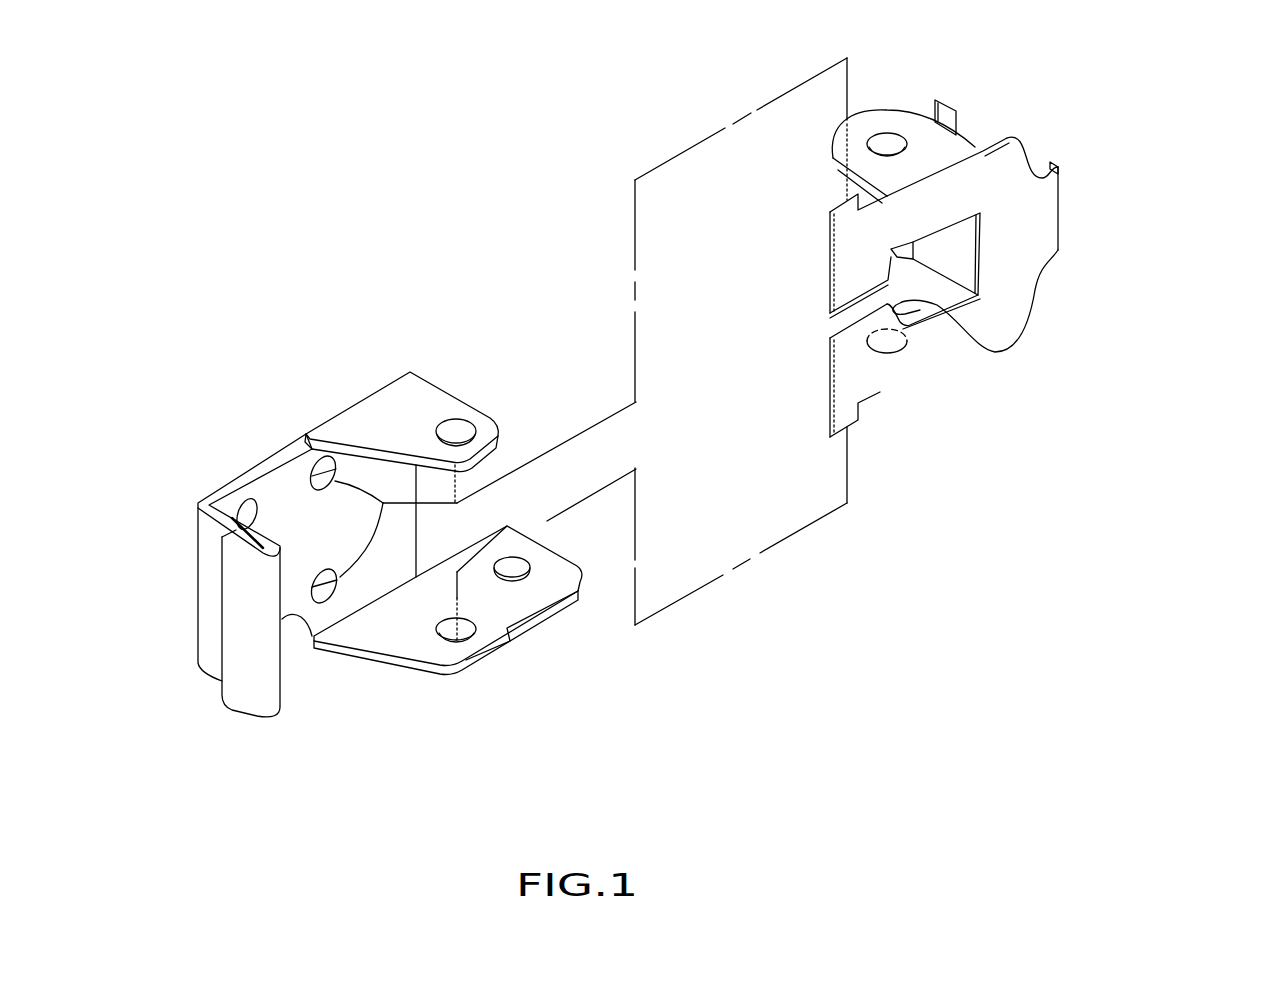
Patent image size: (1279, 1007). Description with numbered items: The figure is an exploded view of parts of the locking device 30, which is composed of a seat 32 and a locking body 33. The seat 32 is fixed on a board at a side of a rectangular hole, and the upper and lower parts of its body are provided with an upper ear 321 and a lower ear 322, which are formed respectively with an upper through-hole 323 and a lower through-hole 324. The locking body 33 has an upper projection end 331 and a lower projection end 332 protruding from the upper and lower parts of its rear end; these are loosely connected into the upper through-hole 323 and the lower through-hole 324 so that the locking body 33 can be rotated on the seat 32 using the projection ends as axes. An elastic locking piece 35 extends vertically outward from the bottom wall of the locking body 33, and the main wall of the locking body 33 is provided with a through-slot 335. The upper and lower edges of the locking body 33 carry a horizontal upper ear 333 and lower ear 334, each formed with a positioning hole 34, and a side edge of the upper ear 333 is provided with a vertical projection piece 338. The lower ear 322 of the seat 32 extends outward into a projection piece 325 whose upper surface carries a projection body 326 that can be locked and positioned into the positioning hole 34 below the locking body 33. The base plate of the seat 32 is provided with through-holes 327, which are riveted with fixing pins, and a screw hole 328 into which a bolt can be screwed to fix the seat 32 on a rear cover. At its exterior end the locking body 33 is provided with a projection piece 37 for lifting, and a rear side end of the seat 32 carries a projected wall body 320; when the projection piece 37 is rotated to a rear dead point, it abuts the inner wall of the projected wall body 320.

The locking device 30 is at (547, 190).
The seat 32 is at (315, 424).
The projected wall body 320 is at (203, 593).
The upper ear 321 is at (404, 398).
The lower ear 322 is at (412, 633).
The upper through-hole 323 is at (458, 425).
The lower through-hole 324 is at (473, 632).
The projection piece 325 is at (543, 592).
The projection body 326 is at (513, 563).
The through-holes 327 is at (470, 497).
The screw hole 328 is at (238, 508).
The locking body 33 is at (1003, 304).
The upper projection end 331 is at (830, 212).
The lower projection end 332 is at (855, 430).
The upper ear 333 is at (880, 120).
The lower ear 334 is at (1020, 343).
The through-slot 335 is at (847, 314).
The vertical projection piece 338 is at (960, 117).
The positioning hole 34 is at (897, 148).
The elastic locking piece 35 is at (957, 255).
The projection piece 37 is at (1058, 205).